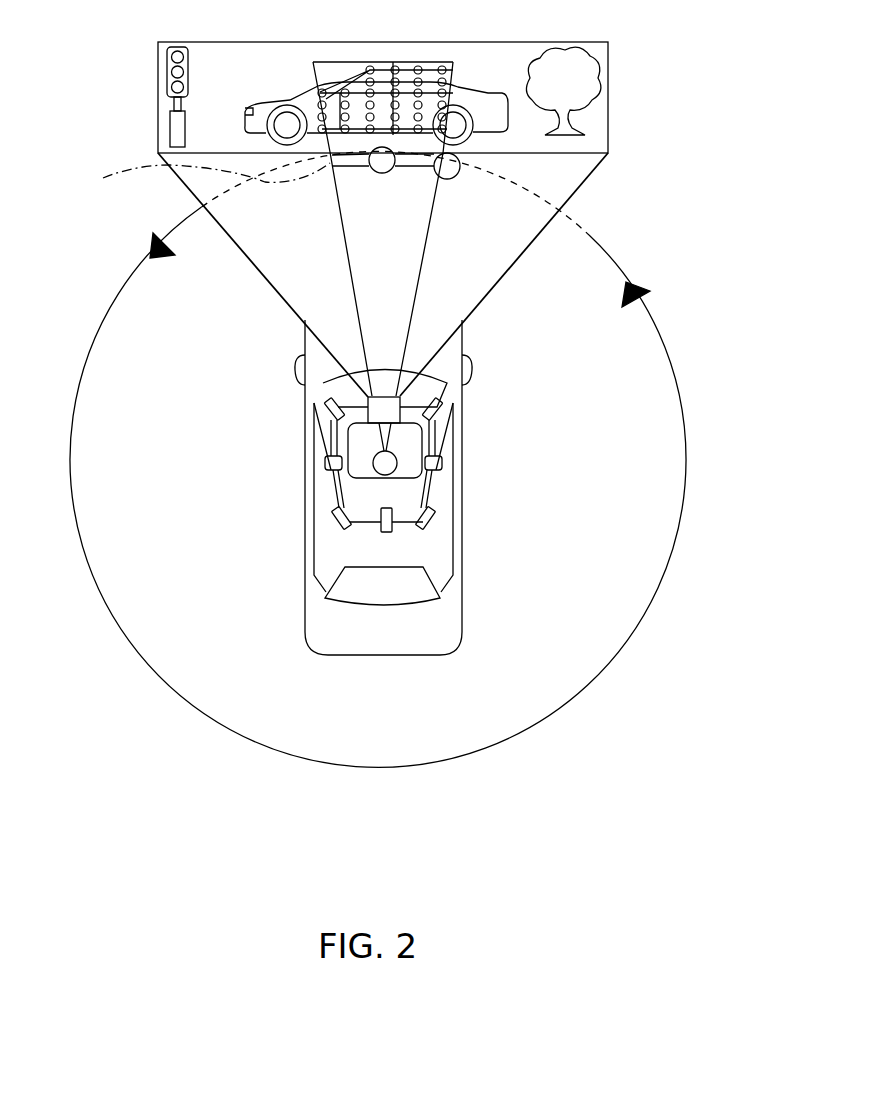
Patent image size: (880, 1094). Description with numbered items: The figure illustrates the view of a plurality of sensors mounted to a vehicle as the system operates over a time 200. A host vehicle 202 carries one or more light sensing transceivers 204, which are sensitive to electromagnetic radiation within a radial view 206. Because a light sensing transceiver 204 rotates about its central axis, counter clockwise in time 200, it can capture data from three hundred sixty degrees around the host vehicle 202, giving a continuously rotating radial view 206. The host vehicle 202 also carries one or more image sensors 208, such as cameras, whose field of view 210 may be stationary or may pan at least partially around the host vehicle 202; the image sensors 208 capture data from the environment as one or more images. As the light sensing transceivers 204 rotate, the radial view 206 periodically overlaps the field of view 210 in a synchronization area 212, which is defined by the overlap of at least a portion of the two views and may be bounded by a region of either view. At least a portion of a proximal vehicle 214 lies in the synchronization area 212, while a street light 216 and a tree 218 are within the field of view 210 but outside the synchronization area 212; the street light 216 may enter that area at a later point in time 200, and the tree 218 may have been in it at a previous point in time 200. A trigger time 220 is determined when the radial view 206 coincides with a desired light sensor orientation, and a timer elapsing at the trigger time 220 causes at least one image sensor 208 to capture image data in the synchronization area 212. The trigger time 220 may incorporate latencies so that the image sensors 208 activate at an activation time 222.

The time 200 is at (690, 487).
The host vehicle 202 is at (410, 561).
The light sensing transceiver 204 is at (373, 462).
The radial view 206 is at (422, 288).
The image sensor 208 is at (323, 381).
The field of view 210 is at (588, 178).
The synchronization area 212 is at (192, 182).
The proximal vehicle 214 is at (463, 78).
The street light 216 is at (181, 45).
The tree 218 is at (578, 46).
The trigger time 220 is at (456, 178).
The activation time 222 is at (380, 173).